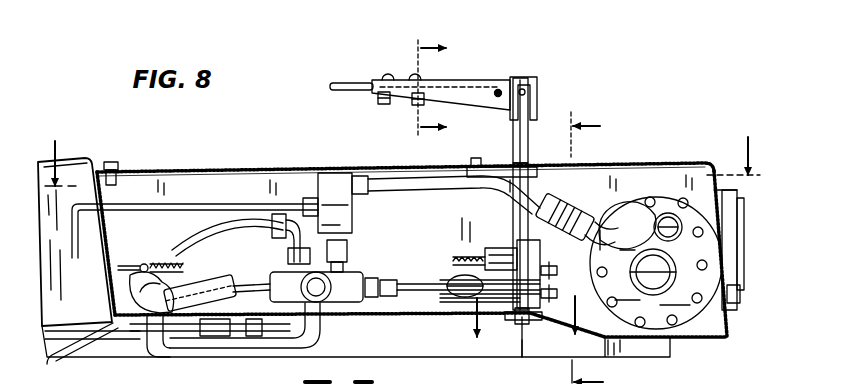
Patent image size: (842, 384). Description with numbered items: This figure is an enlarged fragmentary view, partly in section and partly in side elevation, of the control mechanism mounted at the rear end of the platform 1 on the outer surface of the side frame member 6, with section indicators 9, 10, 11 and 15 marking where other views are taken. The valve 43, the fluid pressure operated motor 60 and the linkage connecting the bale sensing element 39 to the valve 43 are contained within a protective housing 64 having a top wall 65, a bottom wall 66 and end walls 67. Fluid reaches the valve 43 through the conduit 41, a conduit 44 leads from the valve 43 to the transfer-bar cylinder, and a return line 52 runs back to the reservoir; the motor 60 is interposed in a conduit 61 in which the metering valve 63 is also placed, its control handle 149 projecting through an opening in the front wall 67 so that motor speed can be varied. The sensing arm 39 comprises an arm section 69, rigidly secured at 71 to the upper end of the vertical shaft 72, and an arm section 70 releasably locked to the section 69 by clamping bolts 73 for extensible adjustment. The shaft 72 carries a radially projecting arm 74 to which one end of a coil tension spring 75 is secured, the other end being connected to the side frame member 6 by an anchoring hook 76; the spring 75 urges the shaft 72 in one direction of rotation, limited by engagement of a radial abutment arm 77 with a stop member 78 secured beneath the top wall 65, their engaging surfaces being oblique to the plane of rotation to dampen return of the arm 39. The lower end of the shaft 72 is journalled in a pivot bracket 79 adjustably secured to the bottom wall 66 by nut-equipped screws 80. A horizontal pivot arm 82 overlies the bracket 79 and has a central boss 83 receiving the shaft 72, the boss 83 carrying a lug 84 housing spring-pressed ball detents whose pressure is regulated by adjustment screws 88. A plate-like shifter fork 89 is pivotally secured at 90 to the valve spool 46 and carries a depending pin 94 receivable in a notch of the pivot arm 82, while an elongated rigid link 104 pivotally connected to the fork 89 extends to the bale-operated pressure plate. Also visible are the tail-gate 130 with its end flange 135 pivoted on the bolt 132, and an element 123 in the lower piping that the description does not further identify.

The platform 1 is at (167, 157).
The side frame member 6 is at (38, 273).
The section line 9 is at (401, 148).
The section line 10 is at (527, 329).
The section line 11 is at (605, 248).
The section line 15 is at (436, 90).
The bale sensing element 39 is at (487, 74).
The conduit 41 is at (243, 287).
The valve 43 is at (353, 268).
The conduit 44 is at (183, 247).
The valve spool 46 is at (372, 281).
The return line 52 is at (273, 351).
The fluid pressure operated motor 60 is at (700, 250).
The conduit 61 is at (217, 283).
The metering valve 63 is at (333, 175).
The protective housing 64 is at (648, 161).
The top wall 65 is at (268, 170).
The bottom wall 66 is at (387, 315).
The end wall 67 is at (103, 261).
The arm section 69 is at (463, 80).
The arm section 70 is at (350, 82).
The rigid securement 71 is at (496, 97).
The shaft 72 is at (531, 128).
The clamping bolts 73 is at (415, 75).
The arm 74 is at (538, 259).
The coil tension spring 75 is at (160, 265).
The anchoring hook 76 is at (142, 264).
The abutment arm 77 is at (516, 186).
The stop member 78 is at (527, 168).
The pivot bracket 79 is at (520, 325).
The nut-equipped screws 80 is at (524, 357).
The pivot arm 82 is at (542, 288).
The central boss 83 is at (547, 262).
The lug 84 is at (531, 321).
The adjustment screws 88 is at (558, 269).
The shifter fork 89 is at (418, 283).
The pivotal connection 90 is at (388, 279).
The depending pin 94 is at (483, 303).
The rigid link 104 is at (460, 298).
The elbow 123 is at (233, 354).
The tail-gate 130 is at (739, 214).
The pivot bolt 132 is at (735, 291).
The end flange 135 is at (737, 194).
The control handle 149 is at (188, 204).